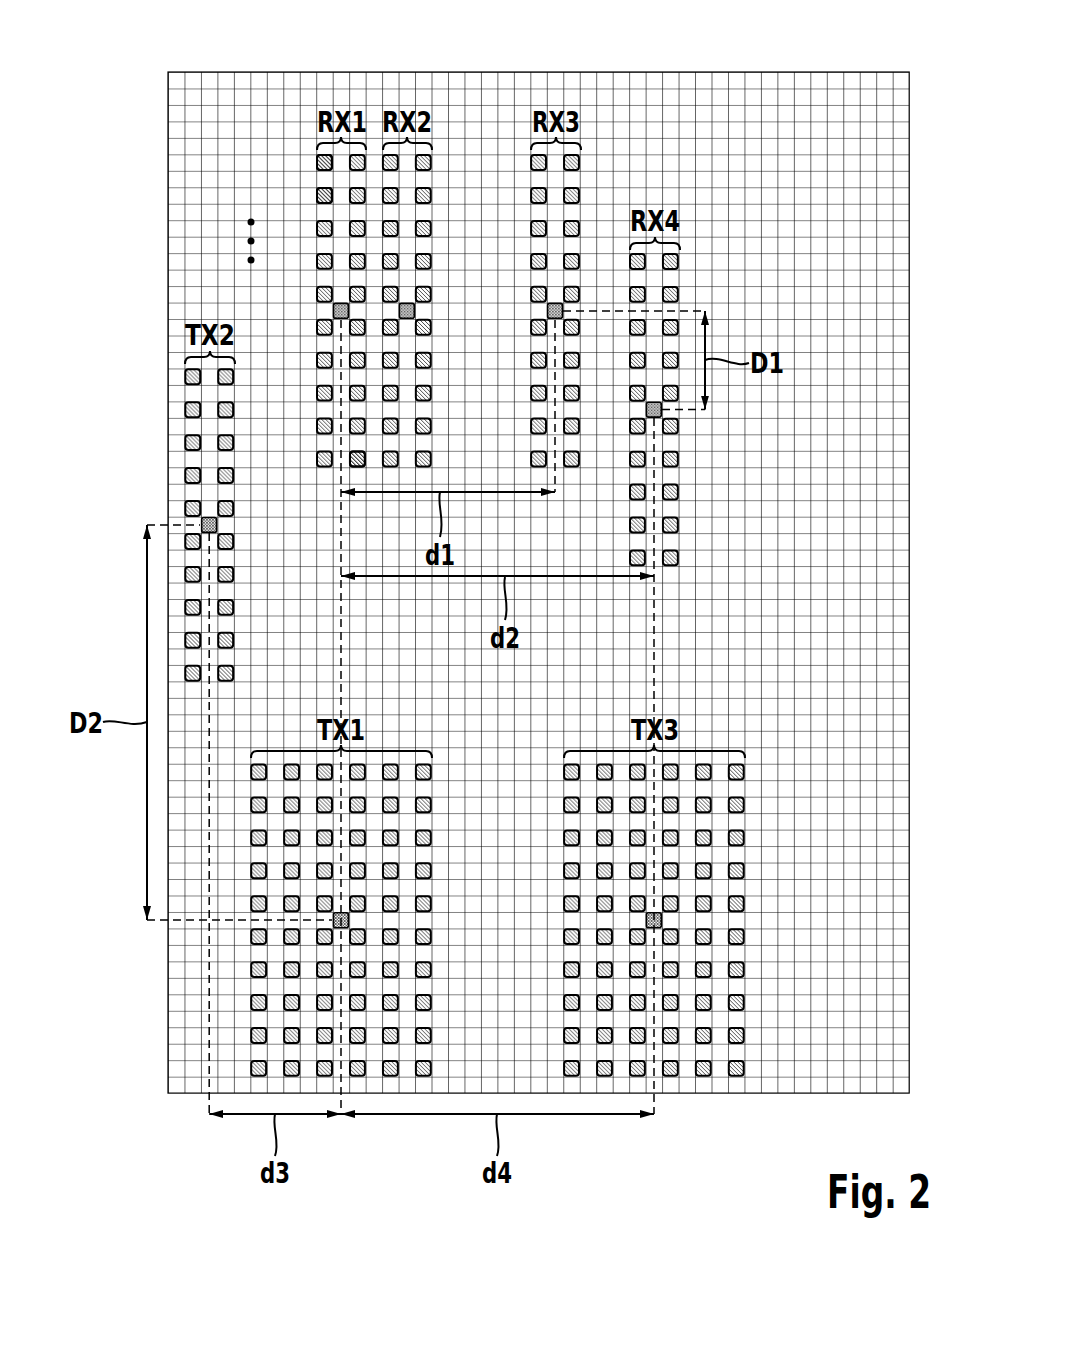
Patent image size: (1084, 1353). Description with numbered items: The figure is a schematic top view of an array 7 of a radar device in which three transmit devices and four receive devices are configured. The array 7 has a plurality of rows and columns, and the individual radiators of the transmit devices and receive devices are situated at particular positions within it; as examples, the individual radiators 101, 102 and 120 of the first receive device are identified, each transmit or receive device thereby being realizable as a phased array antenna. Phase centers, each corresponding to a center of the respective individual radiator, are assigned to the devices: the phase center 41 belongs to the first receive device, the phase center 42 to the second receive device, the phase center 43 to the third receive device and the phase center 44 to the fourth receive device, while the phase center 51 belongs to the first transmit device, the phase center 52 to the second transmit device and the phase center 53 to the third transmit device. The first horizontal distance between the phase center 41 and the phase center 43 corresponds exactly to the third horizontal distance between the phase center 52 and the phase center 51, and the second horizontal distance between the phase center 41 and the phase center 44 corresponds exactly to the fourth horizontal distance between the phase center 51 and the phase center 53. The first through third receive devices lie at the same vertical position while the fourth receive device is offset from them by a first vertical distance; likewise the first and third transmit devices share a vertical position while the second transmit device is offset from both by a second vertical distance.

The array 7 is at (826, 98).
The individual radiator 101 is at (316, 165).
The individual radiator 102 is at (316, 198).
The individual radiator 120 is at (362, 466).
The phase center of first receive device 41 is at (333, 312).
The phase center of second receive device 42 is at (415, 312).
The phase center of third receive device 43 is at (548, 318).
The phase center of fourth receive device 44 is at (662, 415).
The phase center of first transmit device 51 is at (350, 919).
The phase center of second transmit device 52 is at (218, 526).
The phase center of third transmit device 53 is at (663, 919).